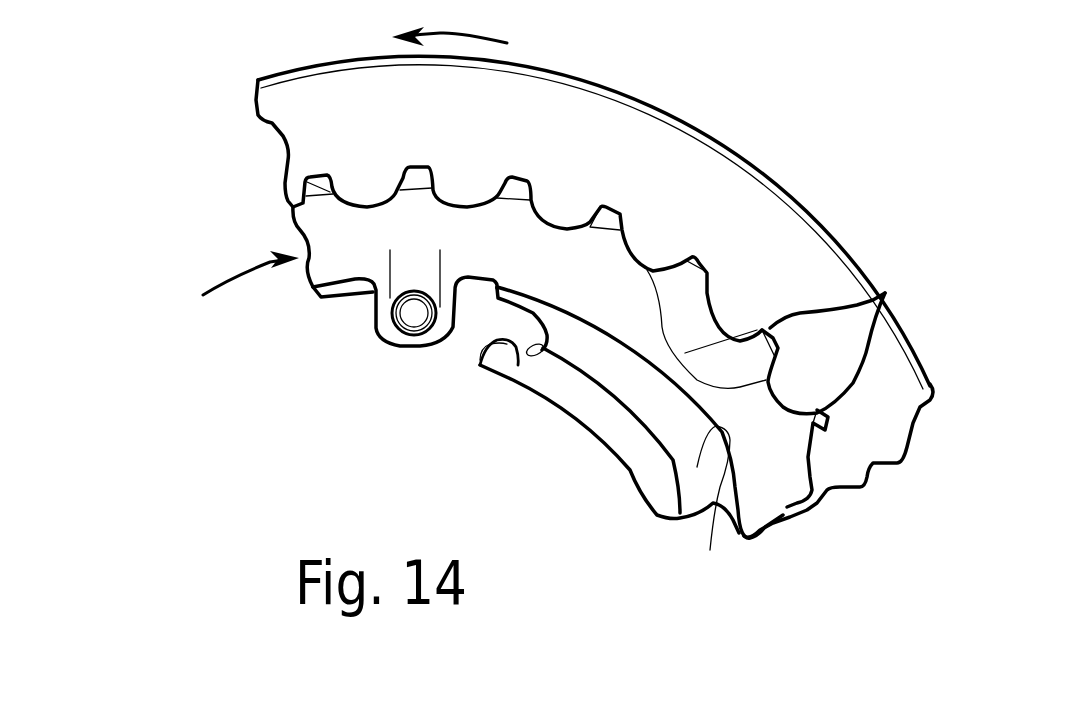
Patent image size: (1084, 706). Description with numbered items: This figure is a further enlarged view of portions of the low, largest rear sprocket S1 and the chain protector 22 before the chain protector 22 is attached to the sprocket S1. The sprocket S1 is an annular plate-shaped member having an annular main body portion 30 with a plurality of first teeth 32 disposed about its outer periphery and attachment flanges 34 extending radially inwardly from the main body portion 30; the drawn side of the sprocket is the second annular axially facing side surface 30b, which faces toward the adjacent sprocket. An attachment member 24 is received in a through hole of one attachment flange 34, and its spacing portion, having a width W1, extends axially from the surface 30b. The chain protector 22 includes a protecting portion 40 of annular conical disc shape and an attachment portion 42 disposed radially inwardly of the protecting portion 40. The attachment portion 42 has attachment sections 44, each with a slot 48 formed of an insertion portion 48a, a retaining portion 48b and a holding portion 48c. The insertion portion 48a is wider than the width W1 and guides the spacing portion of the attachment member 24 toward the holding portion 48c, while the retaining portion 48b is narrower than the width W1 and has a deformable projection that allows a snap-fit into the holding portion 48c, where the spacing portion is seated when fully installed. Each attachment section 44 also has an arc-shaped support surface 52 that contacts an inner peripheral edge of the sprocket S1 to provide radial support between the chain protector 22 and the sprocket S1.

The chain protector 22 is at (657, 90).
The protecting portion 40 is at (663, 153).
The second annular axially facing side surface 30b is at (546, 260).
The first teeth 32 is at (885, 293).
The annular main body portion 30 is at (777, 485).
The sprocket S1 is at (727, 297).
The attachment flanges 34 is at (377, 307).
The width of the spacing portions W1 is at (438, 253).
The attachment members 24 is at (413, 313).
The attachment portion 42 is at (653, 520).
The attachment sections 44 is at (593, 407).
The arc-shaped support surface 52 is at (719, 519).
The slot 48 is at (472, 423).
The insertion portion 48a is at (480, 352).
The retaining portion 48b is at (500, 345).
The holding portion 48c is at (524, 357).